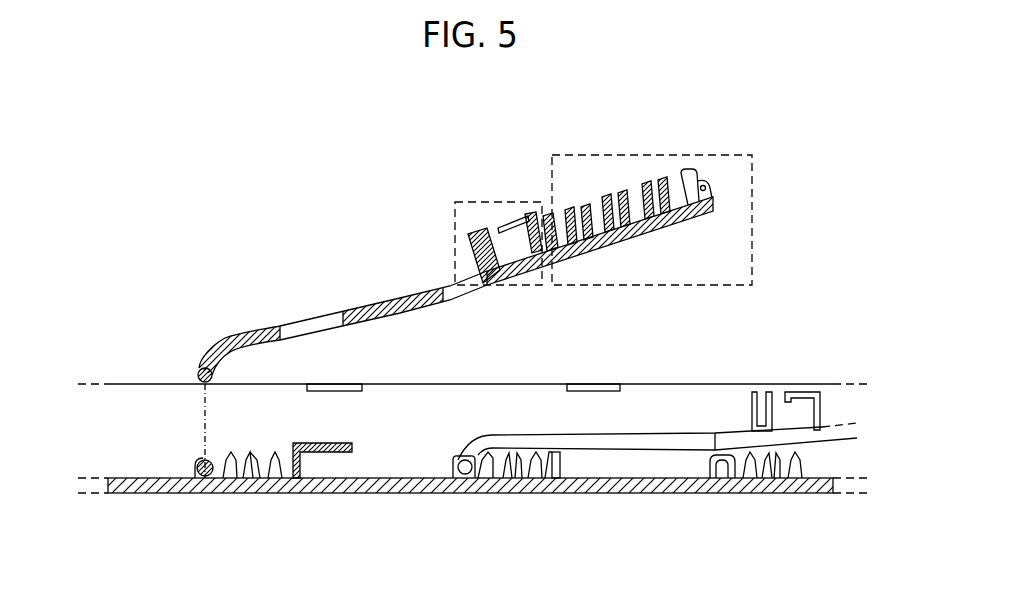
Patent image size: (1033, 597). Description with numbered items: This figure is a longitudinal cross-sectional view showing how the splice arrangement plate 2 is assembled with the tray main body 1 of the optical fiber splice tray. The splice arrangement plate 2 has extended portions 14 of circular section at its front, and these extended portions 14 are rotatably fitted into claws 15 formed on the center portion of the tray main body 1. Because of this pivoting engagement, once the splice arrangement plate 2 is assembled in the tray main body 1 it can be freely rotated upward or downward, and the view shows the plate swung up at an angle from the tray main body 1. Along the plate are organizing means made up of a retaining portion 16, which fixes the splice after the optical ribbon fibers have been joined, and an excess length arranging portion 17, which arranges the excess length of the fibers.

The tray main body 1 is at (400, 483).
The splice arrangement plate 2 is at (360, 306).
The extended portions 14 is at (200, 371).
The claws 15 is at (196, 460).
The retaining portion 16 is at (753, 222).
The excess length arranging portion 17 is at (453, 224).